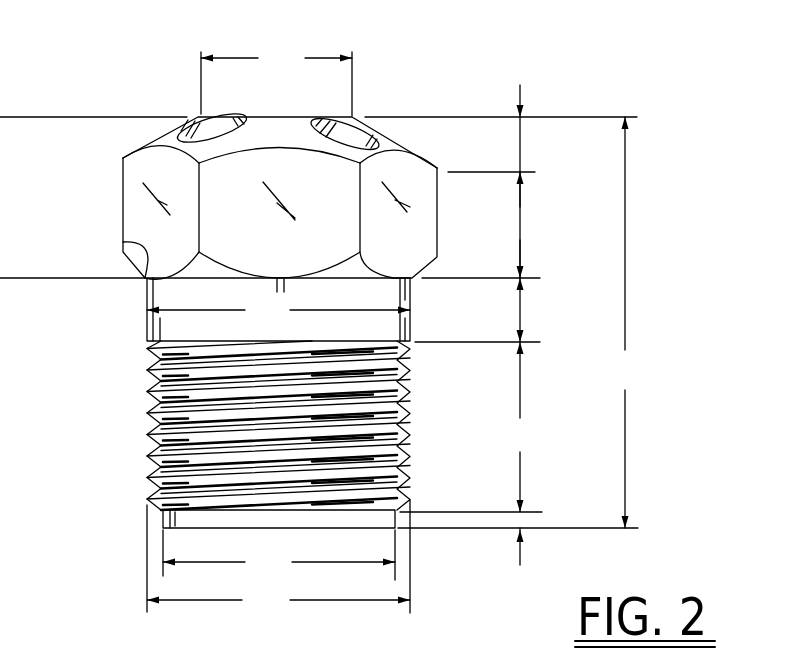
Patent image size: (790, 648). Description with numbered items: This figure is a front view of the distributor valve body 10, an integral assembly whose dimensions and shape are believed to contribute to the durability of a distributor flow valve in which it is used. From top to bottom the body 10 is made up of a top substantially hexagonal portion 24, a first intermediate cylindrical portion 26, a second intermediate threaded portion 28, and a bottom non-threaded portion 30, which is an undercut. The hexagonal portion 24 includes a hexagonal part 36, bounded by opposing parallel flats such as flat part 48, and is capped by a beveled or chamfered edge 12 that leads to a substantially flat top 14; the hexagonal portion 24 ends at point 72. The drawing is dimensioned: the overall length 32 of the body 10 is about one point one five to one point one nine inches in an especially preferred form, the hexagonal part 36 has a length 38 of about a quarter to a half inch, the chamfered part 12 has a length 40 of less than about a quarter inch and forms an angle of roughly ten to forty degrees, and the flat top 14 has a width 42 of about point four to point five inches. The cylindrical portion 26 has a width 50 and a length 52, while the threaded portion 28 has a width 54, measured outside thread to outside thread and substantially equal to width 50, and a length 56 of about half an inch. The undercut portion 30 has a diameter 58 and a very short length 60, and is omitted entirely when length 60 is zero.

The distributor valve body 10 is at (520, 68).
The beveled edge 12 is at (390, 145).
The flat top 14 is at (267, 114).
The top substantially hexagonal portion 24 is at (80, 202).
The first intermediate cylindrical portion 26 is at (136, 310).
The second intermediate threaded portion 28 is at (136, 397).
The bottom non-threaded portion 30 is at (152, 522).
The overall length 32 is at (520, 322).
The hexagonal part 36 is at (133, 195).
The length of hexagonal part 38 is at (522, 225).
The length of chamfered part 40 is at (522, 145).
The width of top 42 is at (276, 80).
The opposing parallel flat part 48 is at (274, 647).
The width of first intermediate cylindrical portion 50 is at (278, 312).
The length of first intermediate portion 52 is at (518, 308).
The width of threaded portion 54 is at (278, 558).
The length of threaded portion 56 is at (471, 427).
The diameter of undercut portion 58 is at (279, 555).
The length of undercut portion 60 is at (520, 518).
The end point of hexagonal portion 72 is at (123, 242).